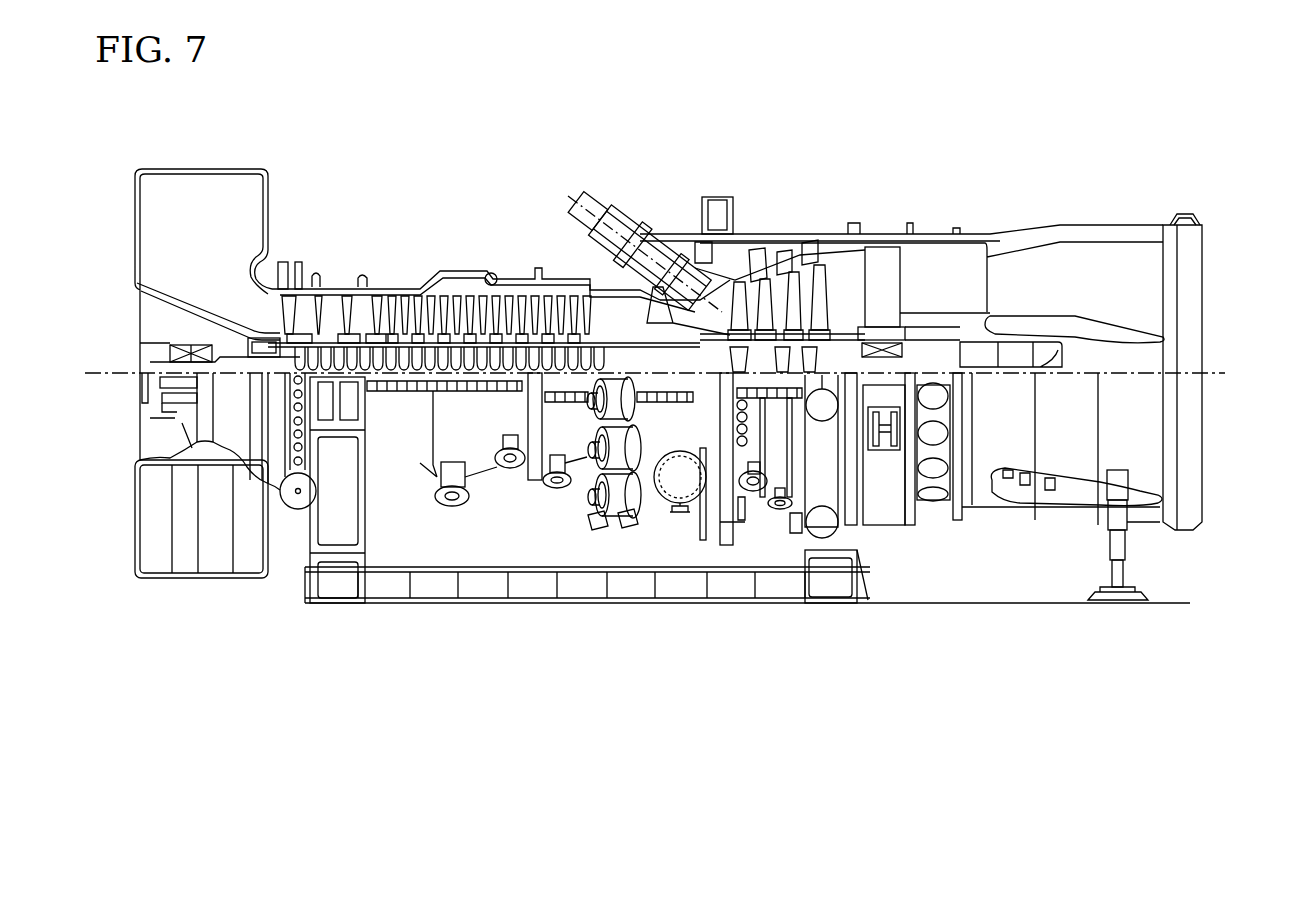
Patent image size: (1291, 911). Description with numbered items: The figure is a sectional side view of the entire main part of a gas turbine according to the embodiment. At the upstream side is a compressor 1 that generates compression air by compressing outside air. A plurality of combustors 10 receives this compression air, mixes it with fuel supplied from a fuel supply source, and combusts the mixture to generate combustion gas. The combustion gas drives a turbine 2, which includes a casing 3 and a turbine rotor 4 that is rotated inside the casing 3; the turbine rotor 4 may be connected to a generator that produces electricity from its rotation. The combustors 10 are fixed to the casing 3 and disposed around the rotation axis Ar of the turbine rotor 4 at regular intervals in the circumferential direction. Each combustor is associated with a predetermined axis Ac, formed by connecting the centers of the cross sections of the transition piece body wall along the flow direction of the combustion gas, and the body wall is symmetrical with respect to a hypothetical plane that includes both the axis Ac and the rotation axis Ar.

The compressor 1 is at (415, 288).
The turbine 2 is at (901, 227).
The casing 3 is at (806, 245).
The turbine rotor 4 is at (845, 300).
The combustor 10 is at (625, 212).
The axis Ac is at (643, 212).
The rotation axis Ar is at (1233, 355).